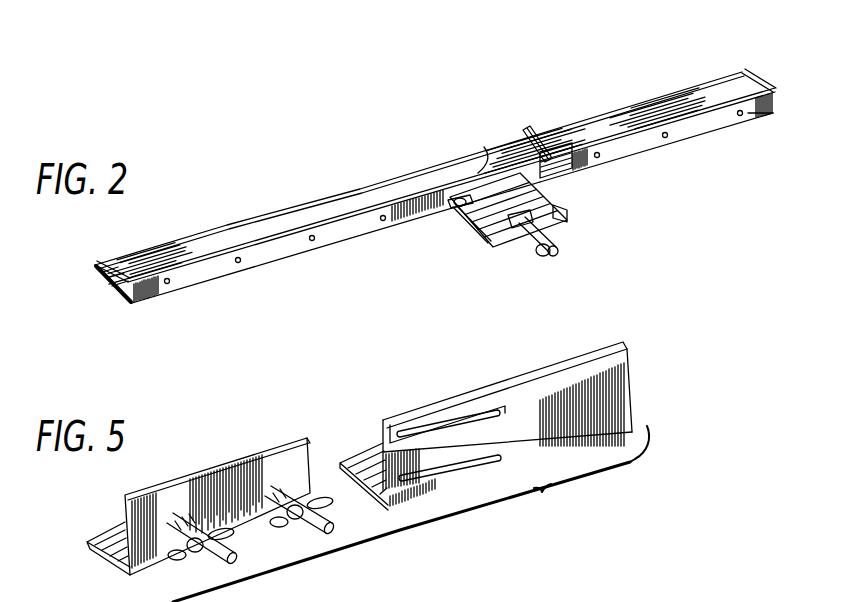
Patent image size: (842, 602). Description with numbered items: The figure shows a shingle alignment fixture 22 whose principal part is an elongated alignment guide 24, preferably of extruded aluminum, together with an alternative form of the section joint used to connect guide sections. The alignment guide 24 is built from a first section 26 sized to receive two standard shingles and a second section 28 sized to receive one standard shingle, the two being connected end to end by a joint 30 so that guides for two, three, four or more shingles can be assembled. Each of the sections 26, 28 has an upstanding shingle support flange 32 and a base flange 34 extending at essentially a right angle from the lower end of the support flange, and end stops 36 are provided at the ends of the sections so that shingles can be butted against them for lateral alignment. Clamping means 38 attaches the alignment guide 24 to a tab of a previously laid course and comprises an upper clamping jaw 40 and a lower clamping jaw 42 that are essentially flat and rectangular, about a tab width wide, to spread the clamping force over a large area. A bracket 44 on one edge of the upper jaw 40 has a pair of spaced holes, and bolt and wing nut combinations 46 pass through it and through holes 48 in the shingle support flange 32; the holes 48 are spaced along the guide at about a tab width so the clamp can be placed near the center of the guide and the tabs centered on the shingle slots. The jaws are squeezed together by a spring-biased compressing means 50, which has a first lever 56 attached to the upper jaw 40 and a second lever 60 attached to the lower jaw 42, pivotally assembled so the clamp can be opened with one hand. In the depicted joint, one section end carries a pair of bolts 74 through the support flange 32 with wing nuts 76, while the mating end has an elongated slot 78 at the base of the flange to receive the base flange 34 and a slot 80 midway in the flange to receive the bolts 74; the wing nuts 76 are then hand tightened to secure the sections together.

In FIG. 2, the alignment fixture 22 is at (287, 175).
In FIG. 2, the alignment guide 24 is at (256, 221).
In FIG. 2, the first section 26 is at (343, 210).
In FIG. 2, the second section 28 is at (600, 127).
In FIG. 2, the joint 30 is at (565, 173).
In FIG. 5, the joint 30 is at (560, 527).
In FIG. 2, the shingle support flange 32 is at (214, 262).
In FIG. 5, the shingle support flange 32 is at (200, 470).
In FIG. 2, the base flange 34 is at (186, 246).
In FIG. 5, the base flange 34 is at (100, 540).
In FIG. 2, the end stops 36 is at (95, 263).
In FIG. 2, the clamping means 38 is at (499, 249).
In FIG. 2, the upper clamping jaw 40 is at (566, 216).
In FIG. 2, the lower clamping jaw 42 is at (472, 227).
In FIG. 2, the bracket 44 is at (454, 206).
In FIG. 2, the bolt and wing nut combinations 46 is at (484, 151).
In FIG. 2, the holes 48 is at (312, 240).
In FIG. 2, the spring-biased compressing means 50 is at (554, 259).
In FIG. 2, the first lever 56 is at (557, 248).
In FIG. 2, the second lever 60 is at (540, 253).
In FIG. 5, the bolts 74 is at (231, 558).
In FIG. 5, the wing nuts 76 is at (190, 557).
In FIG. 5, the elongated slot 78 is at (450, 476).
In FIG. 5, the slot 80 is at (500, 413).